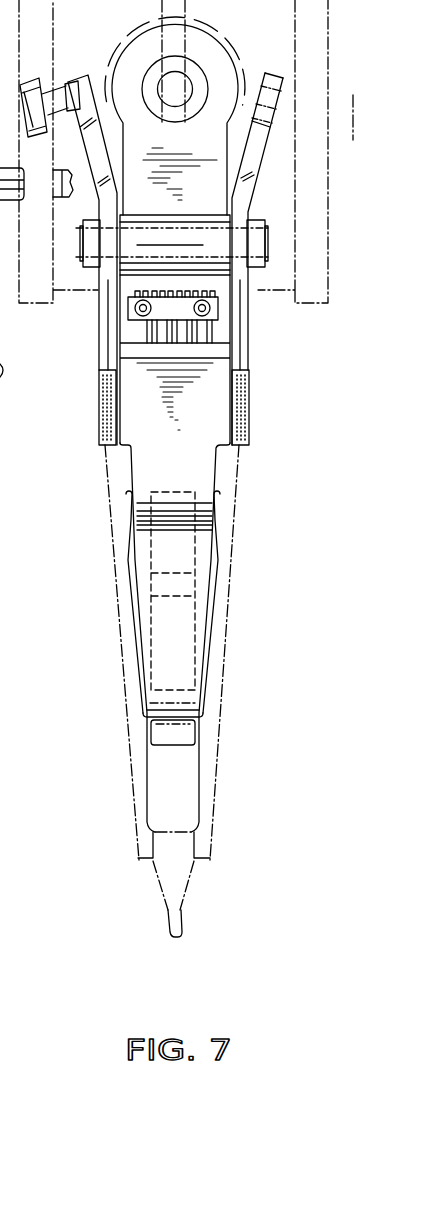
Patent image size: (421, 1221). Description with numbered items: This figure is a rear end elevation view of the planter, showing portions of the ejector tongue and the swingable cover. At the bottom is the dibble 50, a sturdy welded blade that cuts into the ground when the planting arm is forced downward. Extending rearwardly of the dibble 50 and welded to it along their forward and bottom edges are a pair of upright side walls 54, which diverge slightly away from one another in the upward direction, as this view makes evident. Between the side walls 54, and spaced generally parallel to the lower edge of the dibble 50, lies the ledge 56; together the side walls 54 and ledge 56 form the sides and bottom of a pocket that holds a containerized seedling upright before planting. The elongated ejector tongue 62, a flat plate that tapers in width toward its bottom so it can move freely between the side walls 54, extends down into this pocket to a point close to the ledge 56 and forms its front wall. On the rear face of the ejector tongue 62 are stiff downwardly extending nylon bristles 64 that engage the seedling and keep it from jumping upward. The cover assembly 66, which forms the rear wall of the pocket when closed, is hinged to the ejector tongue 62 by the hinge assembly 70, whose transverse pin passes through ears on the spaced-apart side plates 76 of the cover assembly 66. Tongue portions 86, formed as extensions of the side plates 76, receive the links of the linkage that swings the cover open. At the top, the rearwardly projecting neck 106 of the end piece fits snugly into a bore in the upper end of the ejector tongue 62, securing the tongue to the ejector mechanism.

The dibble 50 is at (186, 922).
The side walls 54 is at (227, 622).
The ledge 56 is at (178, 732).
The ejector tongue 62 is at (217, 333).
The nylon bristles 64 is at (145, 340).
The cover assembly 66 is at (287, 560).
The hinge assembly 70 is at (266, 228).
The side plates 76 is at (240, 199).
The tongue portions 86 is at (251, 131).
The neck 106 is at (178, 83).